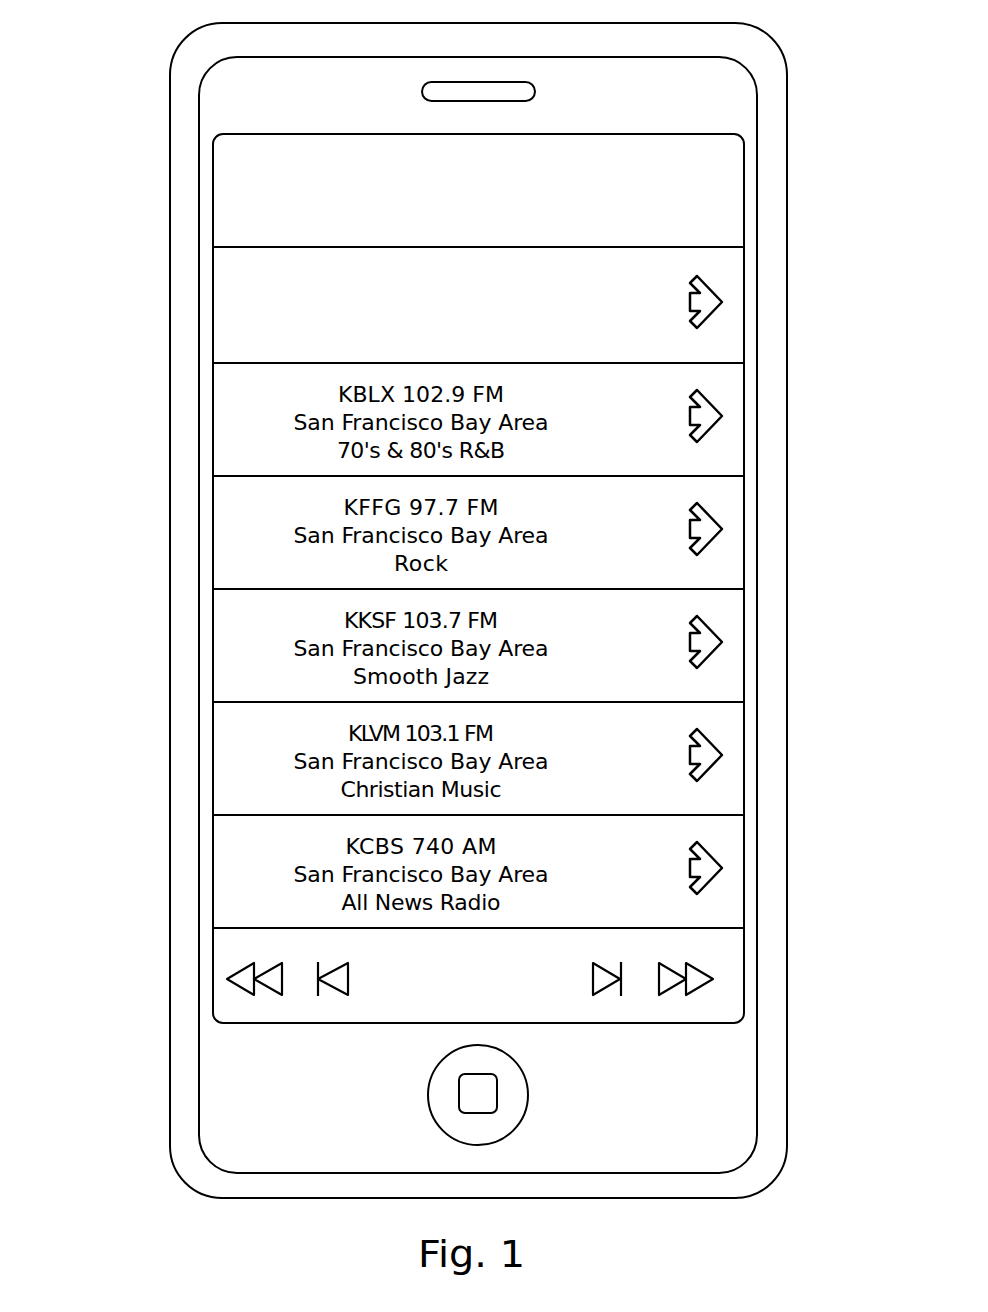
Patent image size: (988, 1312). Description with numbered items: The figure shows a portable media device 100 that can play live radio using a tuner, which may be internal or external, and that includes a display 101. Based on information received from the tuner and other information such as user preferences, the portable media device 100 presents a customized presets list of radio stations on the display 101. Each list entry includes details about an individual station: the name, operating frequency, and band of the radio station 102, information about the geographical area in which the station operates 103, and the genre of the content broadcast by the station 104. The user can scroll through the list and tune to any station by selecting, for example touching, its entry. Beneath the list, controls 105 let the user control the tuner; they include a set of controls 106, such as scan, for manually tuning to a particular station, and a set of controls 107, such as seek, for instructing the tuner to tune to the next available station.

The portable media device 100 is at (152, 32).
The display 101 is at (697, 190).
The name, operating frequency, and band of the radio station 102 is at (325, 272).
The information about the geographical area 103 is at (280, 307).
The genre of the content 104 is at (347, 343).
The controls 105 is at (245, 942).
The set of controls 106 is at (607, 1002).
The set of controls 107 is at (265, 998).